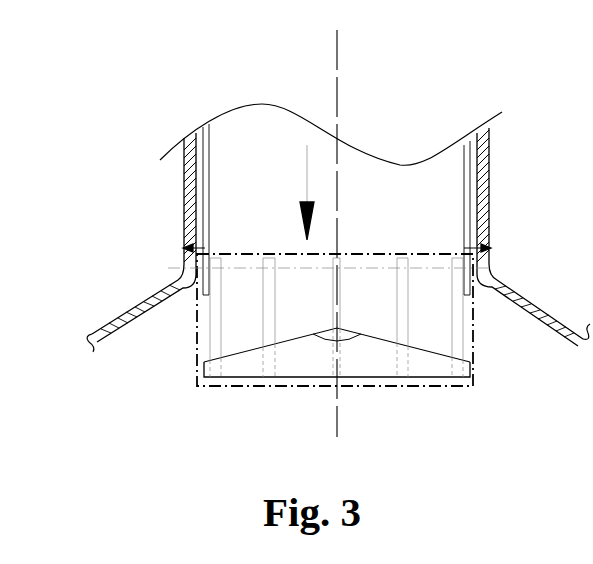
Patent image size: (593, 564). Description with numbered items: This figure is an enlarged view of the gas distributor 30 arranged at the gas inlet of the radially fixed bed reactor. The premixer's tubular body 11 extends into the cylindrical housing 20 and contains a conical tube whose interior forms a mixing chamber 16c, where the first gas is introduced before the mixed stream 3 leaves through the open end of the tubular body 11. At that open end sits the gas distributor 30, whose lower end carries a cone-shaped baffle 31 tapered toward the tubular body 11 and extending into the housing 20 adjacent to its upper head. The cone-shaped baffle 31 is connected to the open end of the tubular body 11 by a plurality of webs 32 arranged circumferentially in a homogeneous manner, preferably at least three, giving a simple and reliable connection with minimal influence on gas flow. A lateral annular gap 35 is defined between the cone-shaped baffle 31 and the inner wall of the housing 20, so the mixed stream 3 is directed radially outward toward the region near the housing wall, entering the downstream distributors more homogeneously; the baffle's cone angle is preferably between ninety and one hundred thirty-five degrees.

The mixed stream 3 is at (288, 192).
The mixing chamber 16c is at (340, 188).
The tubular body 11 is at (392, 186).
The webs 32 is at (395, 255).
The cylindrical housing 20 is at (374, 291).
The cone-shaped baffle 31 is at (392, 305).
The lateral annular gap 35 is at (168, 328).
The gas distributor 30 is at (242, 390).